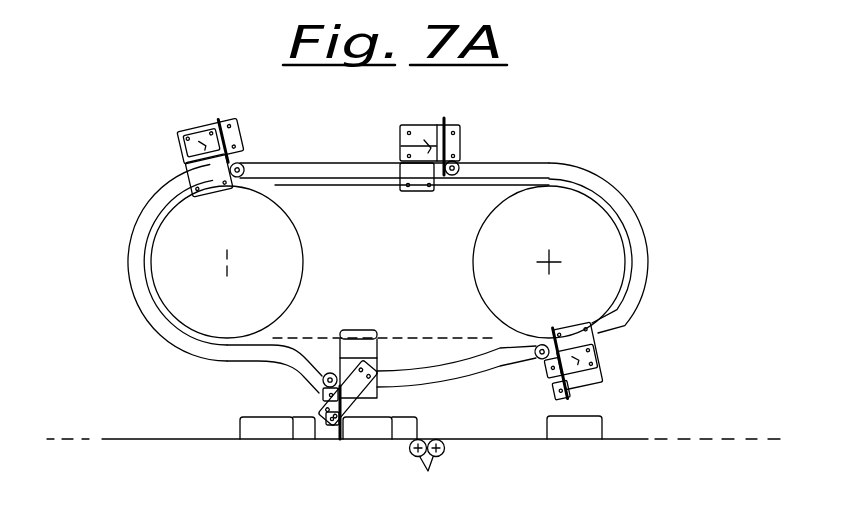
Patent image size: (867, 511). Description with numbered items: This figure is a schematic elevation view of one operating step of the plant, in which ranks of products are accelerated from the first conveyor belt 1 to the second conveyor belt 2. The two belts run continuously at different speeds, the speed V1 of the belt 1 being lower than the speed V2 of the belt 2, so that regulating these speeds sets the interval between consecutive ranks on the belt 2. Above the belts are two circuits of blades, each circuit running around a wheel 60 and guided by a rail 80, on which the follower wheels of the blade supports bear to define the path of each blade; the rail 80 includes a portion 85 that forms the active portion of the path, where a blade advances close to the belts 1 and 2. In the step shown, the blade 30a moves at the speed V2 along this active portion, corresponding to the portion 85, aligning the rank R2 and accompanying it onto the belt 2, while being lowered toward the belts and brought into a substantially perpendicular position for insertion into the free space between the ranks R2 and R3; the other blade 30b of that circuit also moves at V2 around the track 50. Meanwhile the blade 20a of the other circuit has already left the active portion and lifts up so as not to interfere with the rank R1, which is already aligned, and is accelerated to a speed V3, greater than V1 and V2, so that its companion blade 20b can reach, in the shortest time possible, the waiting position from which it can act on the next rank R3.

The first conveyor belt 1 is at (142, 439).
The second conveyor belt 2 is at (653, 439).
The blade 20a is at (568, 395).
The blade 20b is at (217, 118).
The blade 30a is at (335, 438).
The blade 30b is at (447, 119).
The belt lower run 50 is at (299, 341).
The wheel 60 is at (158, 247).
The rail 80 is at (641, 236).
The portion of rail 85 is at (404, 380).
The rank R1 is at (600, 422).
The rank R2 is at (390, 418).
The rank R3 is at (252, 432).
The speed V1 is at (331, 460).
The speed V2 is at (386, 146).
The speed V3 is at (170, 158).